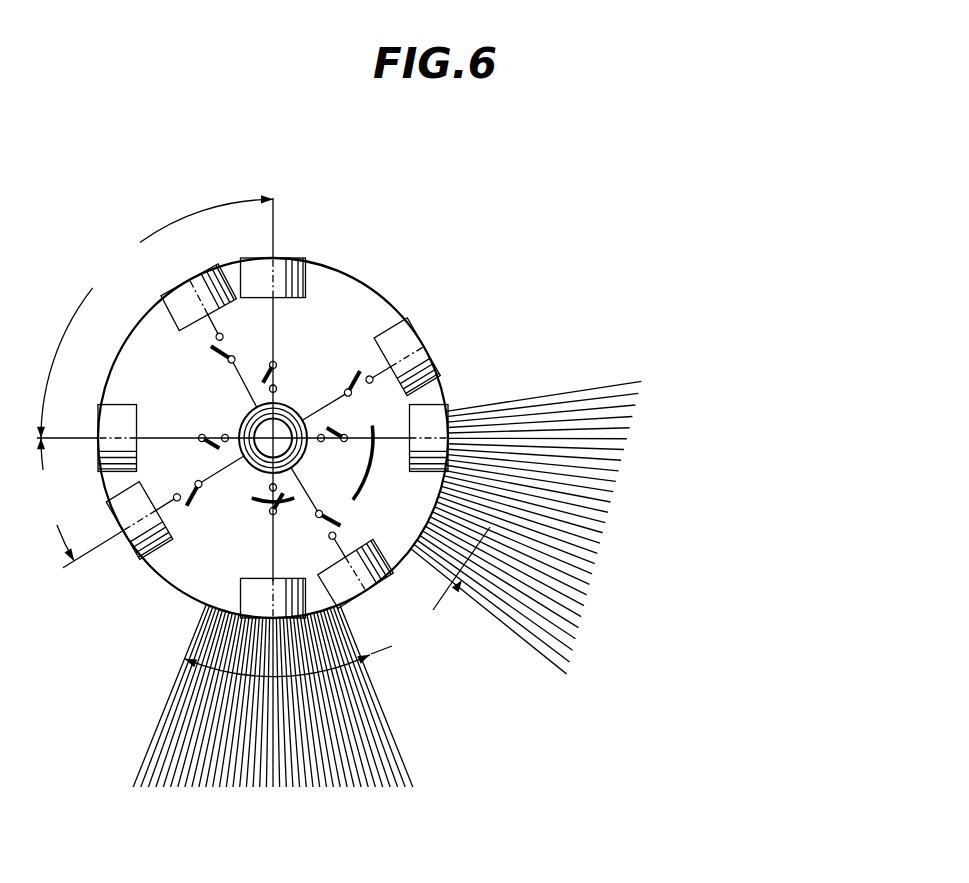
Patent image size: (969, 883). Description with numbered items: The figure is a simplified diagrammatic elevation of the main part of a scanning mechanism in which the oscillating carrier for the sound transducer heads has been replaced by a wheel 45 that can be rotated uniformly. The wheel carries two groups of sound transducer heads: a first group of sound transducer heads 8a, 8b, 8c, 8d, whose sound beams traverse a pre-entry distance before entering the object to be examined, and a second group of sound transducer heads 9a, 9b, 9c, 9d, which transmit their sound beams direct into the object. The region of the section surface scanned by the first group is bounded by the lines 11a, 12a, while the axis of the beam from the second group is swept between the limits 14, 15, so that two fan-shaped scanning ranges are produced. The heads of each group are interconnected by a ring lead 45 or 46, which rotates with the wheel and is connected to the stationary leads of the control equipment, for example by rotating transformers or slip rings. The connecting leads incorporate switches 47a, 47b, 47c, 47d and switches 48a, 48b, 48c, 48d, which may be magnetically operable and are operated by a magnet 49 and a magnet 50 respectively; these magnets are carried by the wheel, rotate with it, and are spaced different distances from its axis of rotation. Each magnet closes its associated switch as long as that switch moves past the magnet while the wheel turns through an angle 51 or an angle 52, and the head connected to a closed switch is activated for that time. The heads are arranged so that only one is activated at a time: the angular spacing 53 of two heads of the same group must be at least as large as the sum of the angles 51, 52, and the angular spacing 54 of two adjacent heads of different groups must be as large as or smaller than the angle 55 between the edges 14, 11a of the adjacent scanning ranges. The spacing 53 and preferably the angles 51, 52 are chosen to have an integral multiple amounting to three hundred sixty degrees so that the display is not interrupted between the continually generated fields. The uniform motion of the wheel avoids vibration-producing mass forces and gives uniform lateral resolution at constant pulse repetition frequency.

The sound transducer head 8a is at (348, 570).
The sound transducer head 8b is at (414, 341).
The sound transducer head 8c is at (190, 301).
The sound transducer head 8d is at (127, 542).
The sound transducer head 9a is at (265, 590).
The sound transducer head 9b is at (422, 418).
The sound transducer head 9c is at (285, 262).
The sound transducer head 9d is at (118, 413).
The line 11a is at (510, 623).
The line 12a is at (505, 470).
The limit 14 is at (382, 703).
The limit 15 is at (160, 712).
The wheel 45 is at (347, 284).
The ring lead 46 is at (247, 468).
The switch 47a is at (340, 533).
The switch 47b is at (360, 369).
The switch 47c is at (211, 363).
The switch 47d is at (185, 486).
The switch 48a is at (253, 509).
The switch 48b is at (332, 446).
The switch 48c is at (281, 376).
The switch 48d is at (212, 434).
The magnet 49 is at (372, 478).
The magnet 50 is at (288, 503).
The angle 51 is at (526, 520).
The angle 52 is at (270, 695).
The angular spacing 53 is at (155, 332).
The angular spacing 54 is at (80, 503).
The angle 55 is at (337, 602).